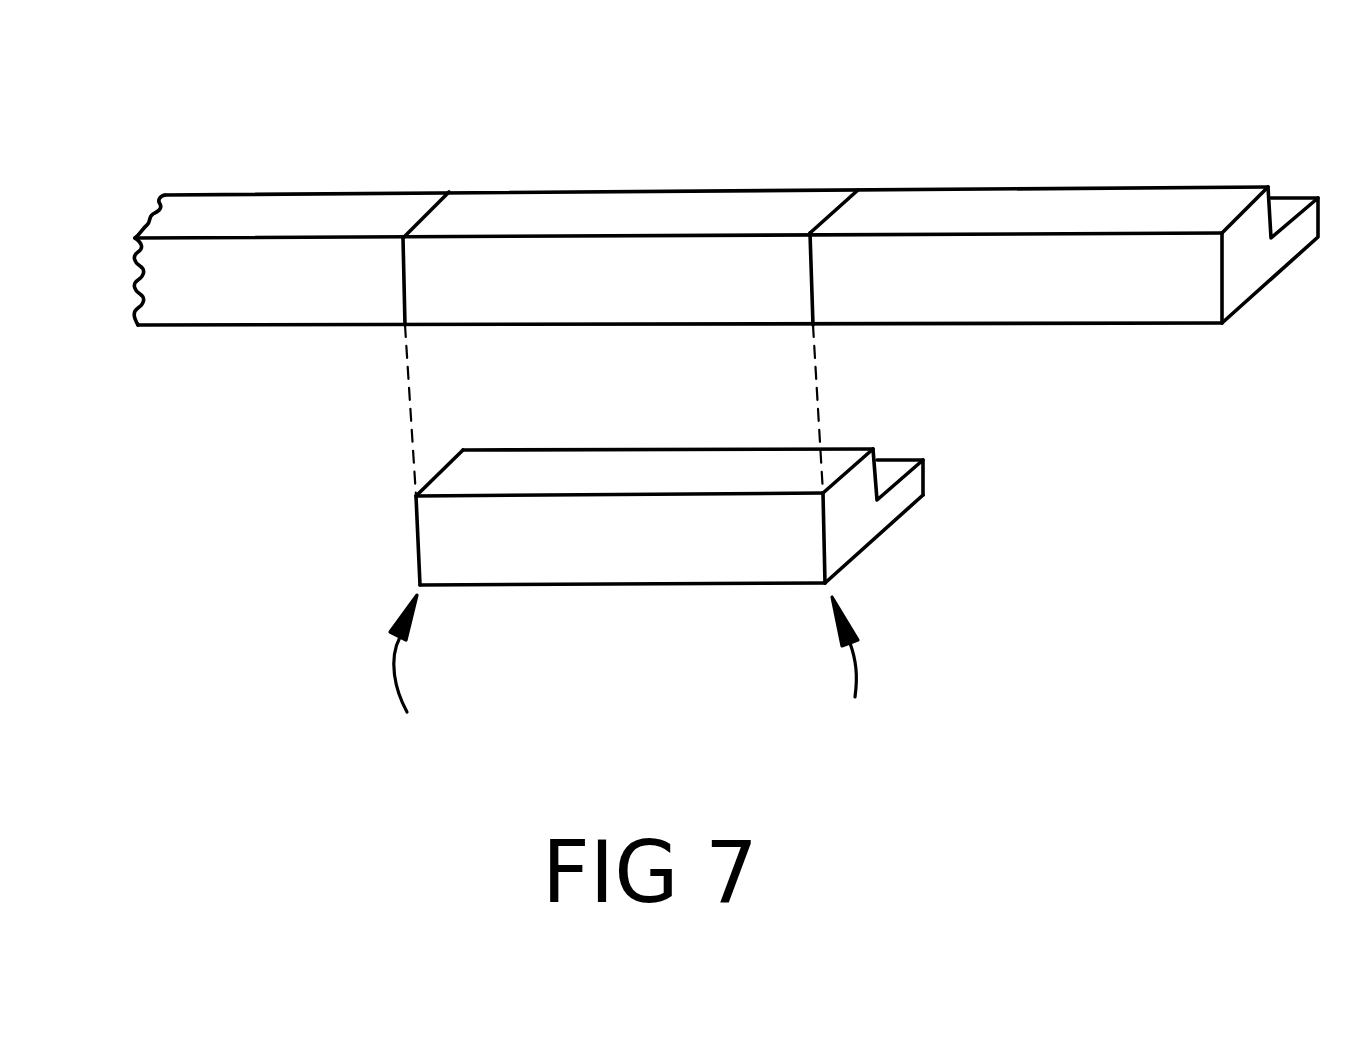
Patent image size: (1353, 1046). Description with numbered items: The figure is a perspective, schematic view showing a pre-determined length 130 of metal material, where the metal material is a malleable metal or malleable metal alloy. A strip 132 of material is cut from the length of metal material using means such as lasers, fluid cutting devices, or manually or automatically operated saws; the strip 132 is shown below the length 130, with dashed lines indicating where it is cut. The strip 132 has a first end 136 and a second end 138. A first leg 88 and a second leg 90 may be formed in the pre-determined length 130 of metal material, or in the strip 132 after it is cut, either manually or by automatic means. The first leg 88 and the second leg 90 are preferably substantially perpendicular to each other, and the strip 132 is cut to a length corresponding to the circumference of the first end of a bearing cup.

The pre-determined length of metal material 130 is at (1117, 208).
The strip of material 132 is at (651, 480).
The second leg 90 is at (573, 473).
The first leg 88 is at (892, 470).
The first end 136 is at (417, 555).
The second end 138 is at (852, 522).